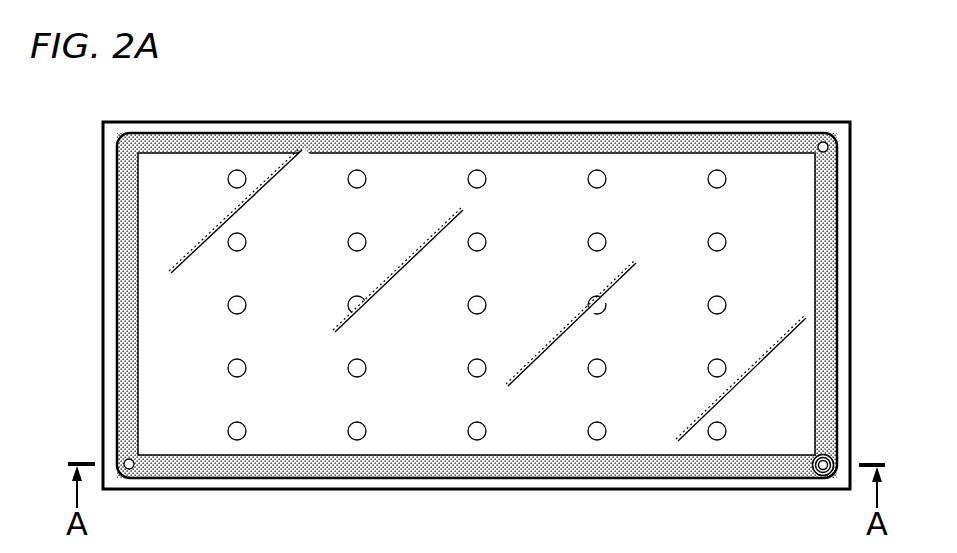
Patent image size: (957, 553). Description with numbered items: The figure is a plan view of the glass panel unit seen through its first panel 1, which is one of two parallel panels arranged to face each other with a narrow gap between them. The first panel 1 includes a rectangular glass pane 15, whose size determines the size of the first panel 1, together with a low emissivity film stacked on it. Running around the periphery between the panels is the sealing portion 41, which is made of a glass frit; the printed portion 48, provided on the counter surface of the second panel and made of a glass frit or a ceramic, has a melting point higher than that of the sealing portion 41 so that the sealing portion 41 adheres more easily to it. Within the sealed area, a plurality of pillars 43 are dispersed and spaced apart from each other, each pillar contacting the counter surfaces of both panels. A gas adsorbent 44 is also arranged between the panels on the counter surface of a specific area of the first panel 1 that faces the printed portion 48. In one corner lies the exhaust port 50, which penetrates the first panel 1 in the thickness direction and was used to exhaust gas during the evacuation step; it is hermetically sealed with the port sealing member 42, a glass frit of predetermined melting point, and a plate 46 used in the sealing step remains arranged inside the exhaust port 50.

The first panel 1 is at (498, 303).
The glass pane 15 is at (318, 178).
The sealing portion 41 is at (843, 297).
The port sealing member 42 is at (833, 461).
The pillars 43 is at (363, 182).
The gas adsorbent 44 is at (828, 145).
The plate 46 is at (827, 472).
The printed portion 48 is at (543, 146).
The exhaust port 50 is at (820, 473).